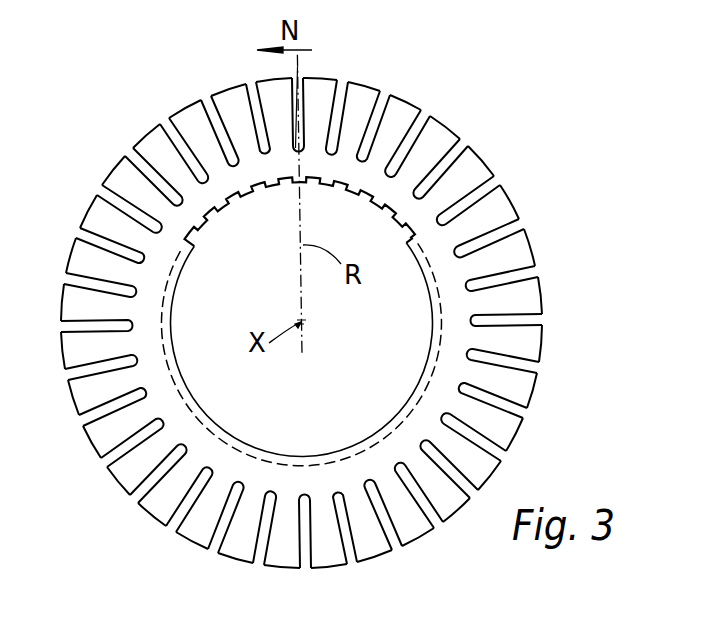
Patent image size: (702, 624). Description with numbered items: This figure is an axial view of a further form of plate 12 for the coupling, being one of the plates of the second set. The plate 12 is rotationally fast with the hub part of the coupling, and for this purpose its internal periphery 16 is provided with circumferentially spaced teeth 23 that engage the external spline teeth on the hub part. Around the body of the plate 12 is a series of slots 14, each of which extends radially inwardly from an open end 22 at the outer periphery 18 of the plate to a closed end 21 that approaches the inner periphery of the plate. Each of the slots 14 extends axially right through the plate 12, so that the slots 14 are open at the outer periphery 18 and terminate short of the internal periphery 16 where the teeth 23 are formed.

The plate 12 is at (305, 284).
The slots 14 is at (426, 115).
The internal periphery 16 is at (183, 335).
The outer periphery 18 is at (483, 160).
The closed end 21 is at (329, 98).
The open end 22 is at (298, 68).
The teeth 23 is at (279, 194).